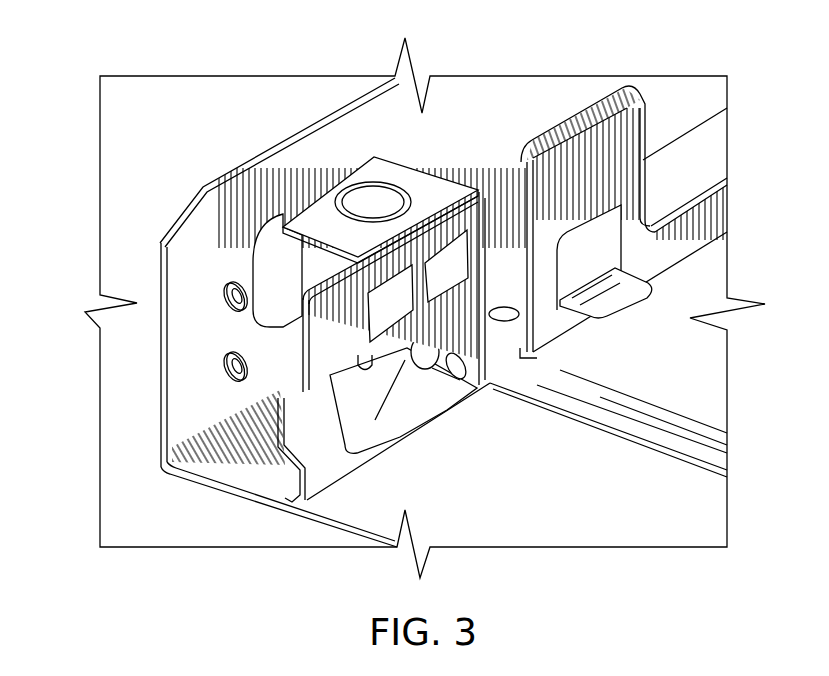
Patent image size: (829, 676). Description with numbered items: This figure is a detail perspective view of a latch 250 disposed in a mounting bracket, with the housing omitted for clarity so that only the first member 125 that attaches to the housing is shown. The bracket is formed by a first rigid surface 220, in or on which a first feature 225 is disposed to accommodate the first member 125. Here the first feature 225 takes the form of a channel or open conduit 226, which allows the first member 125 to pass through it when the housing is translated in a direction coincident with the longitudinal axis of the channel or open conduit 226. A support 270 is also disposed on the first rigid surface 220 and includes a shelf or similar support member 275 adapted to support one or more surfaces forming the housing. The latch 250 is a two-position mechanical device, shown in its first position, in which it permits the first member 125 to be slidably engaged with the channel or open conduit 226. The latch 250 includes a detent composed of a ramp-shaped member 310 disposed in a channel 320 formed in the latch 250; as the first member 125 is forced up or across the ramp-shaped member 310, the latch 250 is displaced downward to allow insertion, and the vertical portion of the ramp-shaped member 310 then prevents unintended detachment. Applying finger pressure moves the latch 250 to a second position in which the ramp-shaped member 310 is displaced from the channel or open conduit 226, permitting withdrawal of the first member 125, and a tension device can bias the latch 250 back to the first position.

The first rigid surface 220 is at (302, 154).
The first feature 225 is at (303, 290).
The channel or open conduit 226 is at (297, 410).
The latch 250 is at (370, 156).
The support 270 is at (657, 195).
The shelf or support member 275 is at (642, 306).
The first member 125 is at (490, 383).
The ramp-shaped member 310 is at (397, 393).
The channel 320 is at (330, 380).